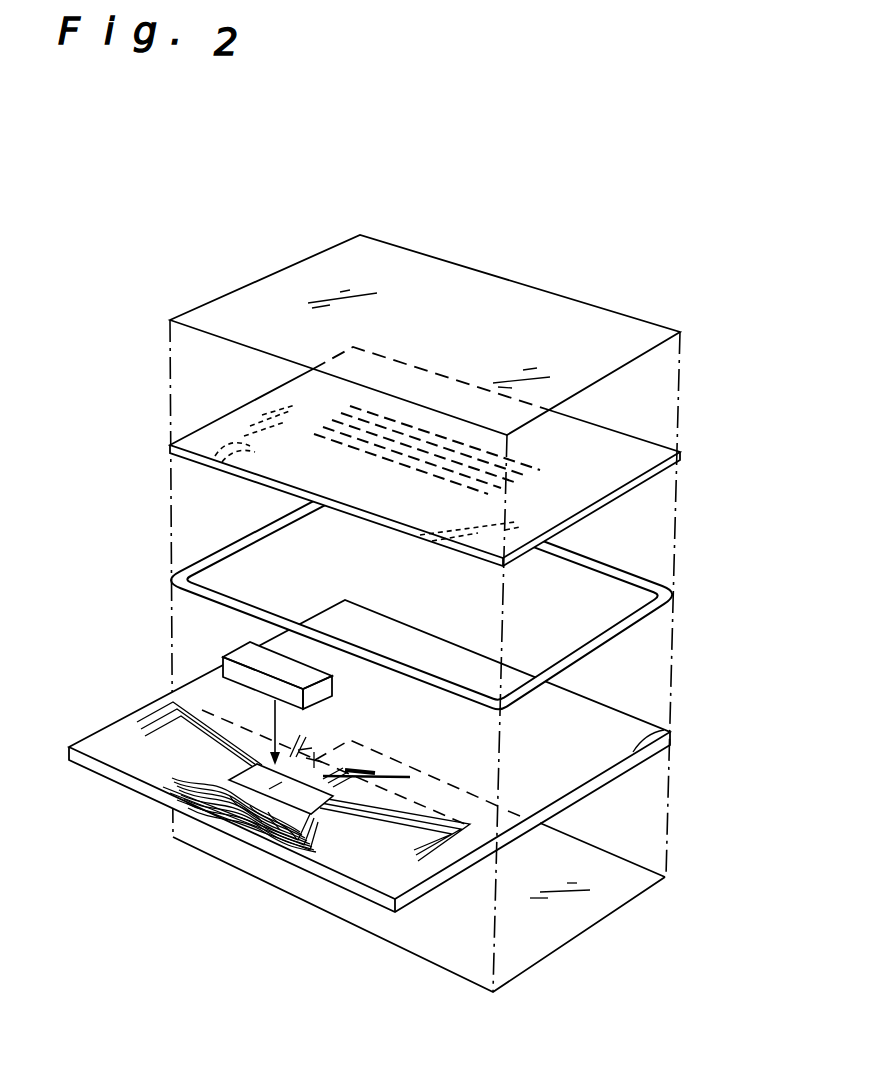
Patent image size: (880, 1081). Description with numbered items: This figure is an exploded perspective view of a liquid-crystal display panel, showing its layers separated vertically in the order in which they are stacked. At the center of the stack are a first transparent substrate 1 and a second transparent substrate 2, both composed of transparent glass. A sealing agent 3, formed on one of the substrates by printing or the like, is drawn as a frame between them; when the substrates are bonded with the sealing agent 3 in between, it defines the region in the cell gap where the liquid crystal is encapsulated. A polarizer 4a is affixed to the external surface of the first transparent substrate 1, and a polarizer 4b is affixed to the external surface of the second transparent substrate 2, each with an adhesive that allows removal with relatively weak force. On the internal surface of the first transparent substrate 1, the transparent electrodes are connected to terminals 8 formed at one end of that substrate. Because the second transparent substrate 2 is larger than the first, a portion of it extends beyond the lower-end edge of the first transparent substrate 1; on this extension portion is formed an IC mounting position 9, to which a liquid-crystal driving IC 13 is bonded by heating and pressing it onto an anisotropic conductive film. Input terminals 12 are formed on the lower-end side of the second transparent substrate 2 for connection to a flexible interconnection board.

The first transparent substrate 1 is at (658, 447).
The second transparent substrate 2 is at (663, 723).
The sealing agent 3 is at (647, 615).
The polarizer 4a is at (543, 303).
The polarizer 4b is at (555, 927).
The terminal 8 is at (207, 463).
The IC mounting position 9 is at (293, 797).
The input terminals 12 is at (235, 822).
The liquid-crystal driving IC 13 is at (263, 647).